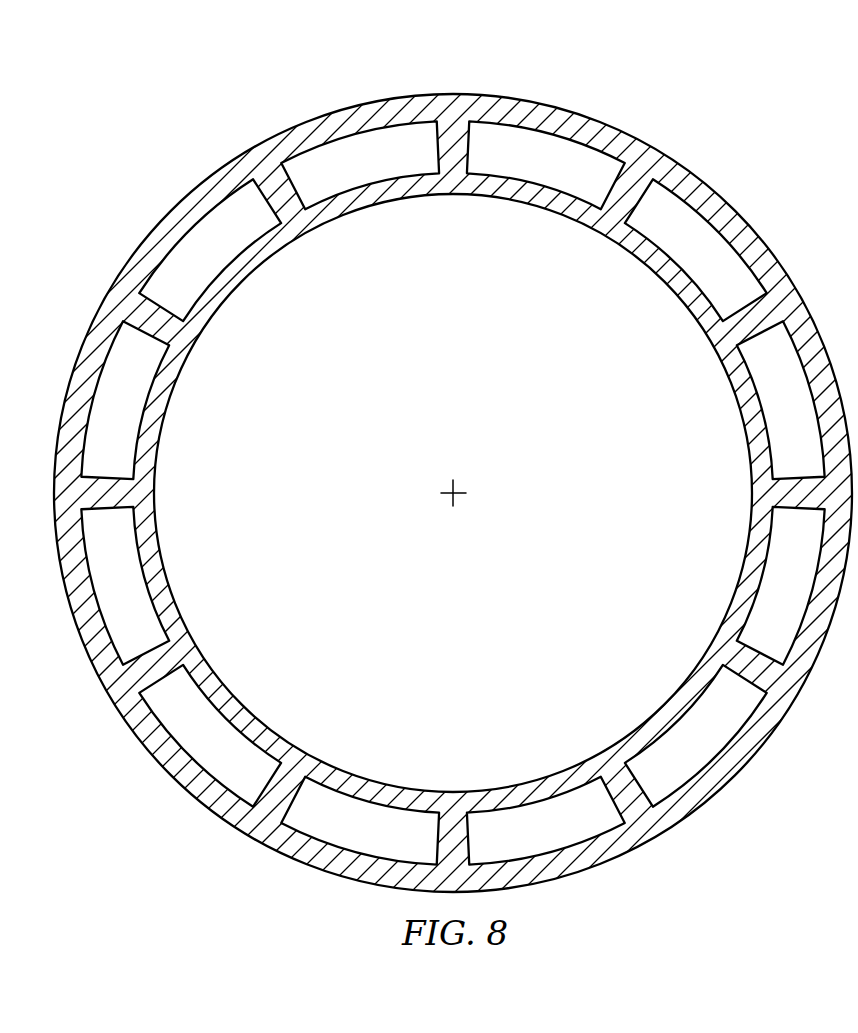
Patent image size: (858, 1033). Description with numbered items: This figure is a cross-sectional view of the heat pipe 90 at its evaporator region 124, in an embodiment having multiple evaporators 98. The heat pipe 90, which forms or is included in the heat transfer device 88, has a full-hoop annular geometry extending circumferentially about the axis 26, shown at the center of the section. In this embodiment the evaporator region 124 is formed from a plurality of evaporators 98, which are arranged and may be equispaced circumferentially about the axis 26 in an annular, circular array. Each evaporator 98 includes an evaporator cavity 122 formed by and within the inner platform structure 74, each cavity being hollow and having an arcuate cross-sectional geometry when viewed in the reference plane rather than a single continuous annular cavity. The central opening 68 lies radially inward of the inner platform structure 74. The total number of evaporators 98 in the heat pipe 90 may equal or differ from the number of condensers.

The axis 26 is at (457, 495).
The central opening 68 is at (434, 310).
The inner platform structure 74 is at (429, 479).
The heat transfer device 88 is at (429, 479).
The heat pipe 90 is at (429, 479).
The evaporator 98 is at (453, 482).
The evaporator cavity 122 is at (670, 212).
The evaporator region 124 is at (517, 112).